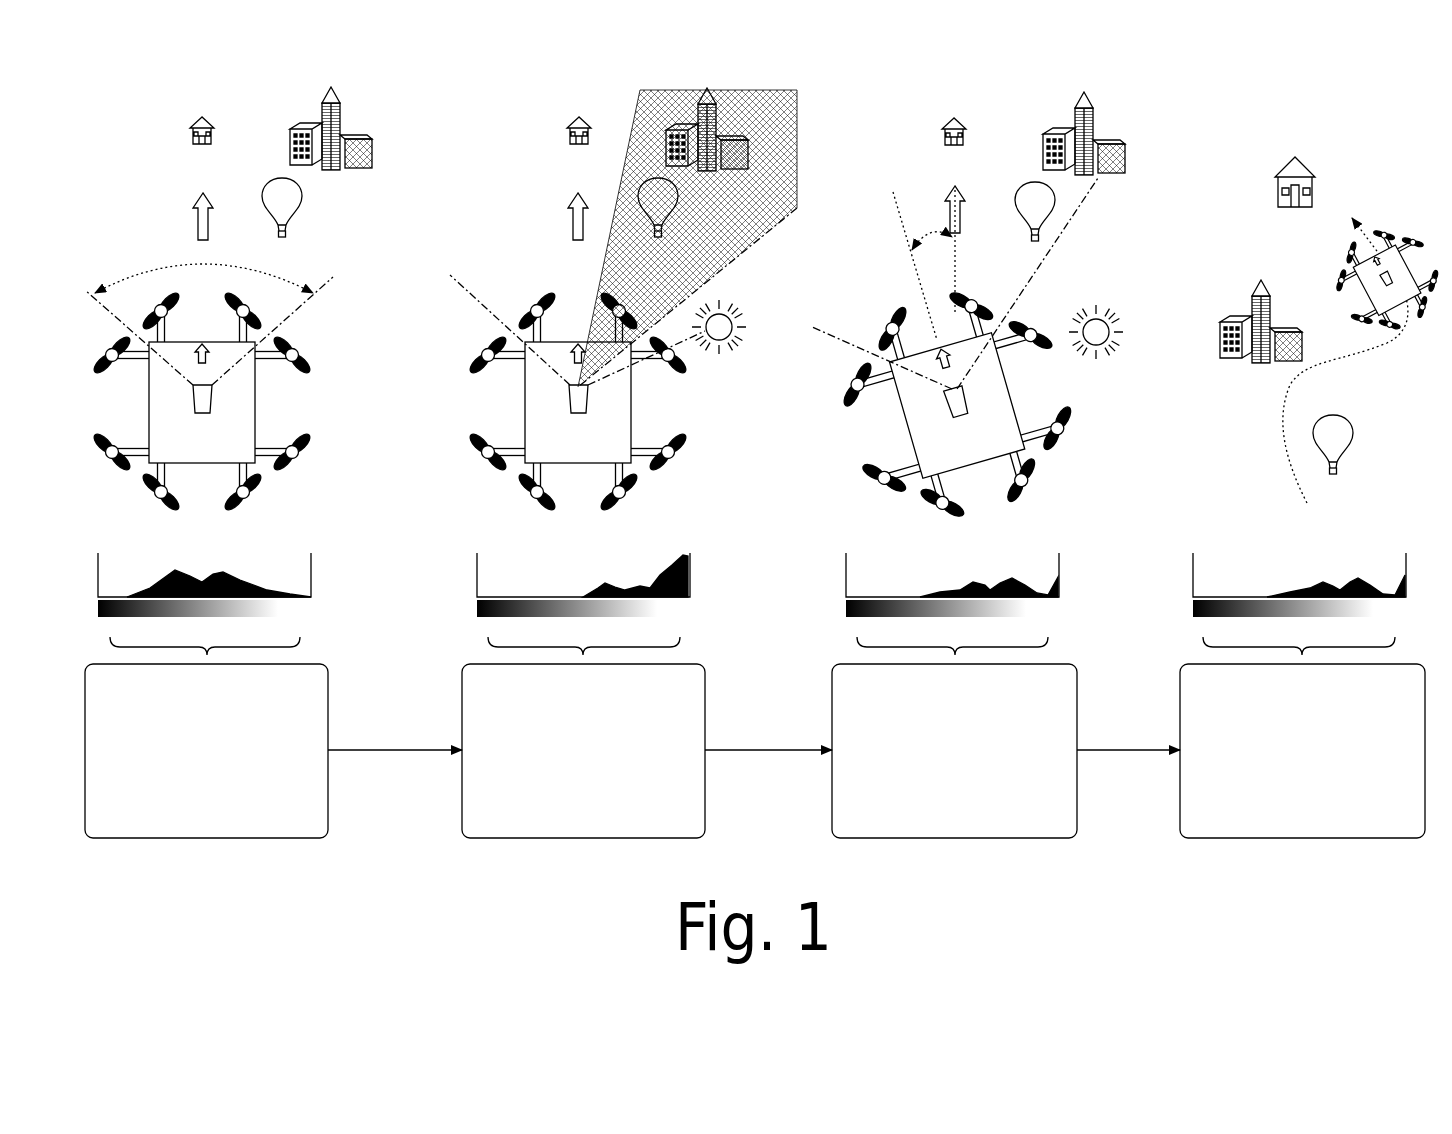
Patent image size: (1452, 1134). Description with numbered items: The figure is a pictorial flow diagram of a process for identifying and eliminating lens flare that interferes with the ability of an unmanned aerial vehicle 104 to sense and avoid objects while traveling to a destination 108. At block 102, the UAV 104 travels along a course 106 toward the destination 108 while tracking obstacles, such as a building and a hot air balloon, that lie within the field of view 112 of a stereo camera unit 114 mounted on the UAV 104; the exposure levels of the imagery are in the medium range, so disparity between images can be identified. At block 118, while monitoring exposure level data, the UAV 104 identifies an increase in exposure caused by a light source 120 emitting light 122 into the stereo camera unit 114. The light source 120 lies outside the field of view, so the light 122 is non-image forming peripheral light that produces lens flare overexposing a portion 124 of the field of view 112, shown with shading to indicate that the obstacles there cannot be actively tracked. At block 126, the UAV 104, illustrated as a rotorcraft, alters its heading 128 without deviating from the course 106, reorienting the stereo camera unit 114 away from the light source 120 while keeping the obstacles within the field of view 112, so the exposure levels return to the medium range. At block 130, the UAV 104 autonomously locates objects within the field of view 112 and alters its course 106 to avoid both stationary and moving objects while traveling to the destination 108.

The block 102 is at (190, 804).
The unmanned aerial vehicle 104 is at (150, 410).
The course 106 is at (197, 226).
The destination 108 is at (193, 125).
The field of view 112 is at (152, 268).
The stereo camera unit 114 is at (212, 396).
The block 118 is at (567, 817).
The light source 120 is at (740, 308).
The light 122 is at (613, 370).
The portion 124 is at (783, 170).
The block 126 is at (938, 830).
The heading 128 is at (942, 365).
The block 130 is at (1286, 806).